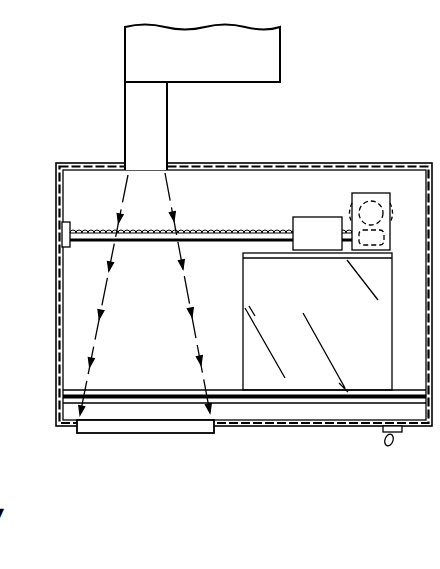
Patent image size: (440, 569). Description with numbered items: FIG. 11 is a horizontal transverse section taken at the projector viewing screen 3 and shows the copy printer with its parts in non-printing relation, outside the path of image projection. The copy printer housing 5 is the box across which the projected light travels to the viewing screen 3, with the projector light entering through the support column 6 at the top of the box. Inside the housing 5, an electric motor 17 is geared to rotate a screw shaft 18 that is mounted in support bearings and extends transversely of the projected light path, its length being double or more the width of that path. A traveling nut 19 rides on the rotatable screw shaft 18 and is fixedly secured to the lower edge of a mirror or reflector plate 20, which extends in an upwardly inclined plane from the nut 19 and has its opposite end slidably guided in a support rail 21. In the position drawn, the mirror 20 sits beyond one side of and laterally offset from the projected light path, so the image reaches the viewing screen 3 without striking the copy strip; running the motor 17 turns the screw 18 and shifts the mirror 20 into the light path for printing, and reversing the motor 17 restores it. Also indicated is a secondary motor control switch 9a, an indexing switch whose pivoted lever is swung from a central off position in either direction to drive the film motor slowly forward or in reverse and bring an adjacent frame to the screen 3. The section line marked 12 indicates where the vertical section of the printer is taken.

The viewing screen 3 is at (186, 440).
The copy printer housing 5 is at (95, 165).
The support column 6 is at (133, 43).
The secondary motor control switch 9a is at (383, 440).
The section line 12 is at (345, 85).
The electric motor 17 is at (392, 208).
The screw shaft 18 is at (204, 231).
The traveling nut 19 is at (307, 217).
The mirror 20 is at (243, 326).
The support rail 21 is at (281, 424).